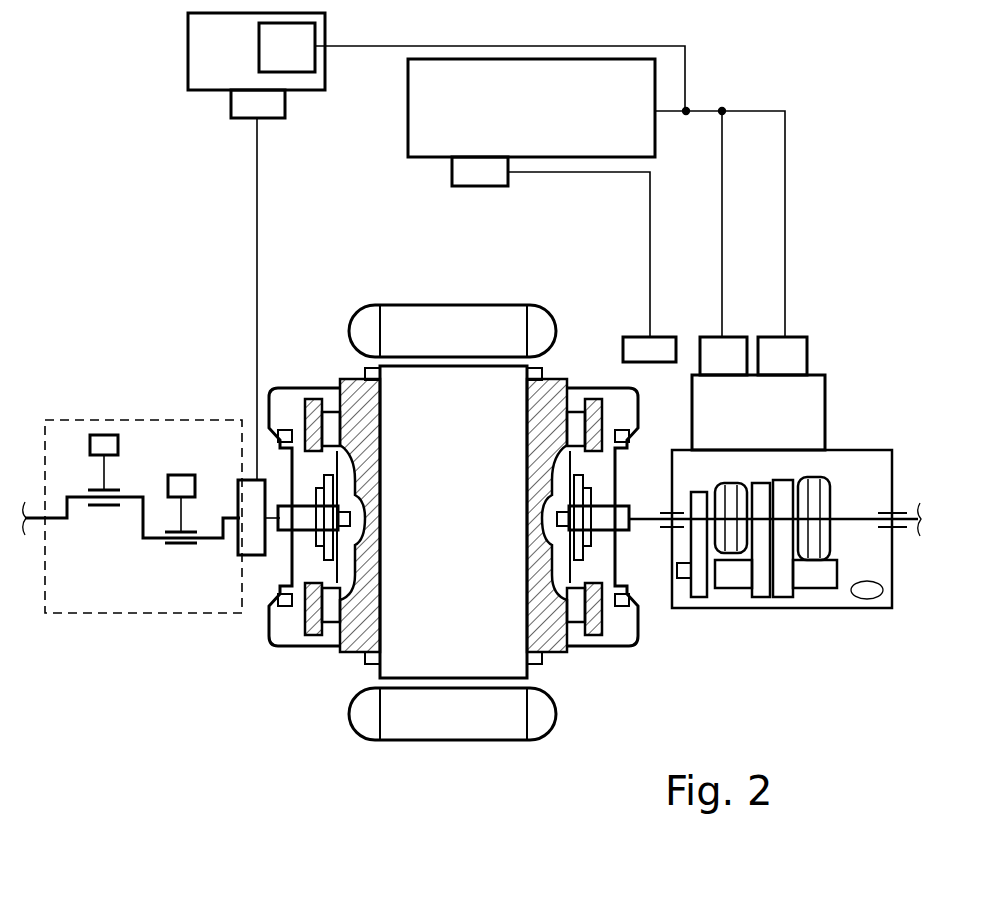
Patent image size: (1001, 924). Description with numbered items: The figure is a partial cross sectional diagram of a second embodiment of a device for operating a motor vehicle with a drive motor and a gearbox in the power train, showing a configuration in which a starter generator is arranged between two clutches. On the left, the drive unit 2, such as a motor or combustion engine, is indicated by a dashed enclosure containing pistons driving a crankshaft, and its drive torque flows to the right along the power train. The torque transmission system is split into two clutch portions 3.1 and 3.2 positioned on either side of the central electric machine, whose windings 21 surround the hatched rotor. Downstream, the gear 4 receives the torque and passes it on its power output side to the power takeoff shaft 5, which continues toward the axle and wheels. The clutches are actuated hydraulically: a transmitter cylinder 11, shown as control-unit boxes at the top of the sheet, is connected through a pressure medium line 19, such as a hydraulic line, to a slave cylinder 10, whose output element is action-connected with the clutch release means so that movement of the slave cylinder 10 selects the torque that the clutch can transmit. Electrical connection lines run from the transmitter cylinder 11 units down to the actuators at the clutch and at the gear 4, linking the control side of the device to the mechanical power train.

The drive unit 2 is at (72, 458).
The pressure medium line 19 is at (152, 540).
The slave cylinder 10 is at (254, 540).
The transmitter cylinder 11 is at (240, 103).
The stator of electric machine 21 is at (483, 640).
The first bearing / end shield of electric machine 3.1 is at (317, 631).
The second bearing / end shield of electric machine 3.2 is at (603, 635).
The gear 4 is at (838, 545).
The power takeoff shaft 5 is at (905, 513).